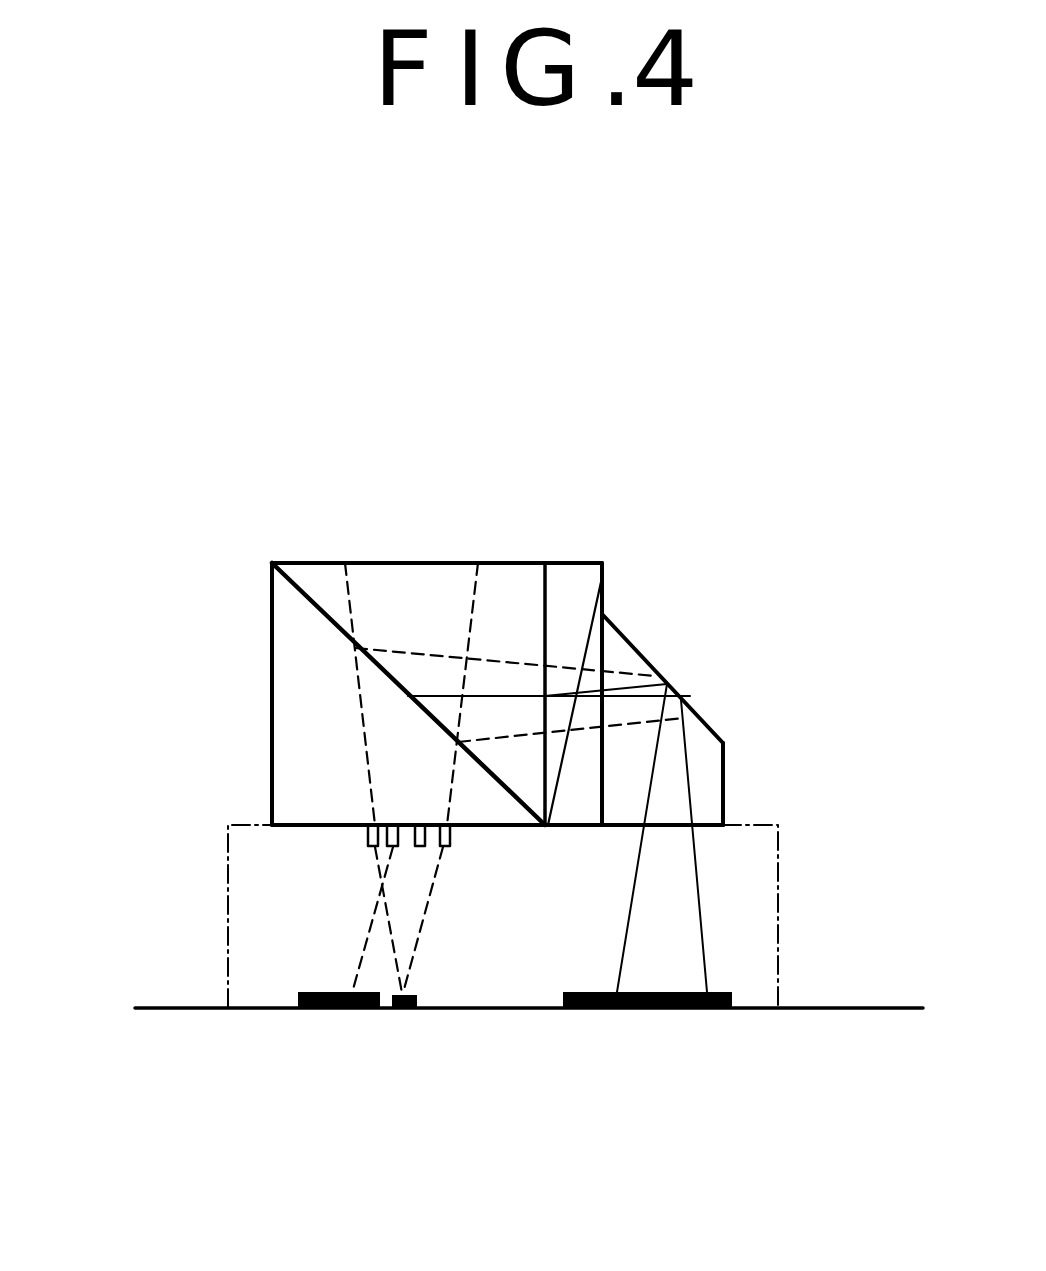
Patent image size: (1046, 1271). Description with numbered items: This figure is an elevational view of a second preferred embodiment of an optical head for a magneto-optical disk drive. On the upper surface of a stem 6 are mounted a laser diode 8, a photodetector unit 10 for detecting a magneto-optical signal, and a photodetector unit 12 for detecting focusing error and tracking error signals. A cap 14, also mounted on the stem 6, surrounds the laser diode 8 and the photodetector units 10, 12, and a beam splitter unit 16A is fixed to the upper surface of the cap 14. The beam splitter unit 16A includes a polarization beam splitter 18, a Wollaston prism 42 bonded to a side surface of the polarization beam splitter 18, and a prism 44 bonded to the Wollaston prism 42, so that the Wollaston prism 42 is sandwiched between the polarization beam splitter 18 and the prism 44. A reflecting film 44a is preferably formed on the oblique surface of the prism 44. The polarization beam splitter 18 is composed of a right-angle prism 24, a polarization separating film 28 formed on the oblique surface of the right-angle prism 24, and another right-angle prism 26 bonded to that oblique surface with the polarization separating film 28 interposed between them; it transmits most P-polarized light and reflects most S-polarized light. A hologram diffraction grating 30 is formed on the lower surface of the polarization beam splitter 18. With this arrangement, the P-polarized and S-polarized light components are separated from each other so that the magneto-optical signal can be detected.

The stem 6 is at (853, 1008).
The laser diode 8 is at (408, 1010).
The photodetector unit 10 is at (658, 1013).
The photodetector unit 12 is at (323, 1010).
The cap 14 is at (778, 905).
The beam splitter unit 16A is at (614, 584).
The polarization beam splitter 18 is at (425, 560).
The right-angle prism 24 is at (283, 712).
The right-angle prism 26 is at (375, 580).
The polarization separating film 28 is at (315, 612).
The hologram diffraction grating 30 is at (365, 840).
The Wollaston prism 42 is at (575, 562).
The prism 44 is at (708, 747).
The reflecting film 44a is at (635, 643).